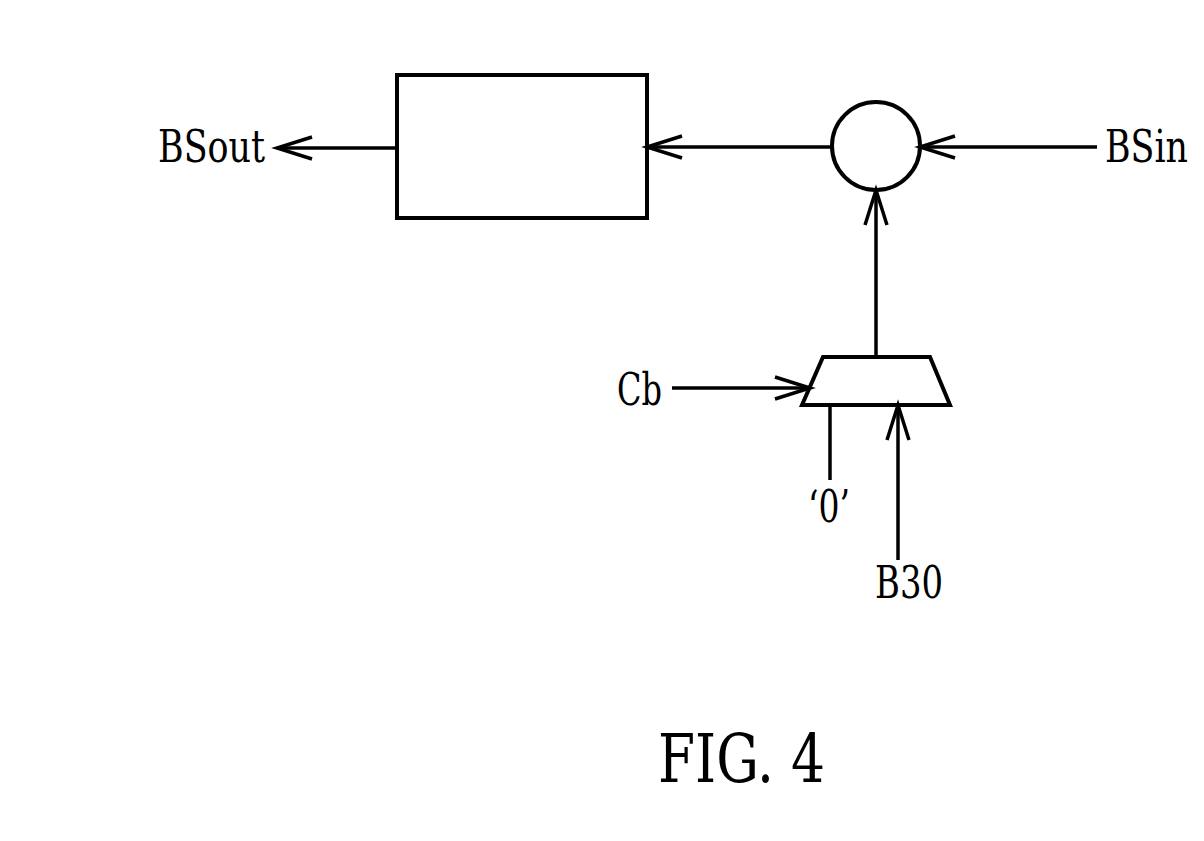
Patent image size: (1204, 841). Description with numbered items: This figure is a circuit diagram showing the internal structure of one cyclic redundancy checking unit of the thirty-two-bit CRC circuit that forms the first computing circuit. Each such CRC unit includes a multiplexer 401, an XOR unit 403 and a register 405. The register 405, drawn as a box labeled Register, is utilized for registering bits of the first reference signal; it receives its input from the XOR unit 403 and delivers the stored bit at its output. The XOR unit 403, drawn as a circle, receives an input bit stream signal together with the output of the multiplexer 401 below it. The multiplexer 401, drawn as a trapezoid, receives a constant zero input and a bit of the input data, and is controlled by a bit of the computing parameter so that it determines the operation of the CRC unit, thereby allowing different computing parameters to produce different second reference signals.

The multiplexer 401 is at (940, 380).
The XOR unit 403 is at (877, 102).
The register 405 is at (602, 75).